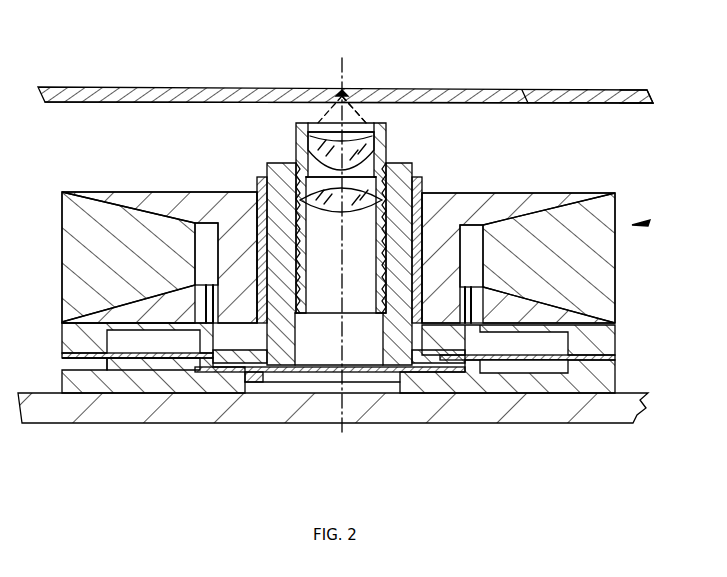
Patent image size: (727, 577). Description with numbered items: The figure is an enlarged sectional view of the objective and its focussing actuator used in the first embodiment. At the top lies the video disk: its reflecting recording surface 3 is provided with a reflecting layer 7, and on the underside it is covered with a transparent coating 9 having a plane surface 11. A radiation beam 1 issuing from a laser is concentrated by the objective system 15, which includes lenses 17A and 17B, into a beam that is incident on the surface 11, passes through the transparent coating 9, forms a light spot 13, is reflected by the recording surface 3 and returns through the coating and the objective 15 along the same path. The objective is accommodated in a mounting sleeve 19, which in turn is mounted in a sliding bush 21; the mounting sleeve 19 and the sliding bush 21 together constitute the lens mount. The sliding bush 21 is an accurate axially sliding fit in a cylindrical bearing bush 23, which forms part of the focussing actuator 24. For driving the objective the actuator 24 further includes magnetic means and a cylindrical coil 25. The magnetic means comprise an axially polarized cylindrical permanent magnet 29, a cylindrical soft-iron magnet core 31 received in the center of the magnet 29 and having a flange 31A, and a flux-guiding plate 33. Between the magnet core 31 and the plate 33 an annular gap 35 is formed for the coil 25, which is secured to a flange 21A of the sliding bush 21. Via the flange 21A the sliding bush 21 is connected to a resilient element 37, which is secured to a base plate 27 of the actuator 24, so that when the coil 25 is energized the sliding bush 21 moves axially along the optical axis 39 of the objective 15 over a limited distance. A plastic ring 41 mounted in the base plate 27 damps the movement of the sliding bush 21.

The radiation beam 1 is at (352, 108).
The reflecting recording surface 3 is at (521, 90).
The reflecting layer 7 is at (572, 89).
The transparent coating 9 is at (625, 104).
The plane surface 11 is at (531, 104).
The light spot 13 is at (345, 91).
The objective system 15 is at (292, 123).
The lens 17A is at (388, 194).
The lens 17B is at (370, 152).
The mounting sleeve 19 is at (306, 152).
The sliding bush 21 is at (339, 310).
The flange 21A is at (410, 362).
The cylindrical bearing bush 23 is at (257, 187).
The focussing actuator 24 is at (661, 223).
The cylindrical coil 25 is at (213, 290).
The base plate 27 is at (600, 379).
The cylindrical permanent magnet 29 is at (543, 258).
The soft-iron magnet core 31 is at (132, 240).
The flange 31A is at (138, 196).
The flux-guiding plate 33 is at (126, 313).
The annular gap 35 is at (468, 300).
The resilient element 37 is at (160, 358).
The optical axis 39 is at (340, 72).
The plastic ring 41 is at (263, 384).